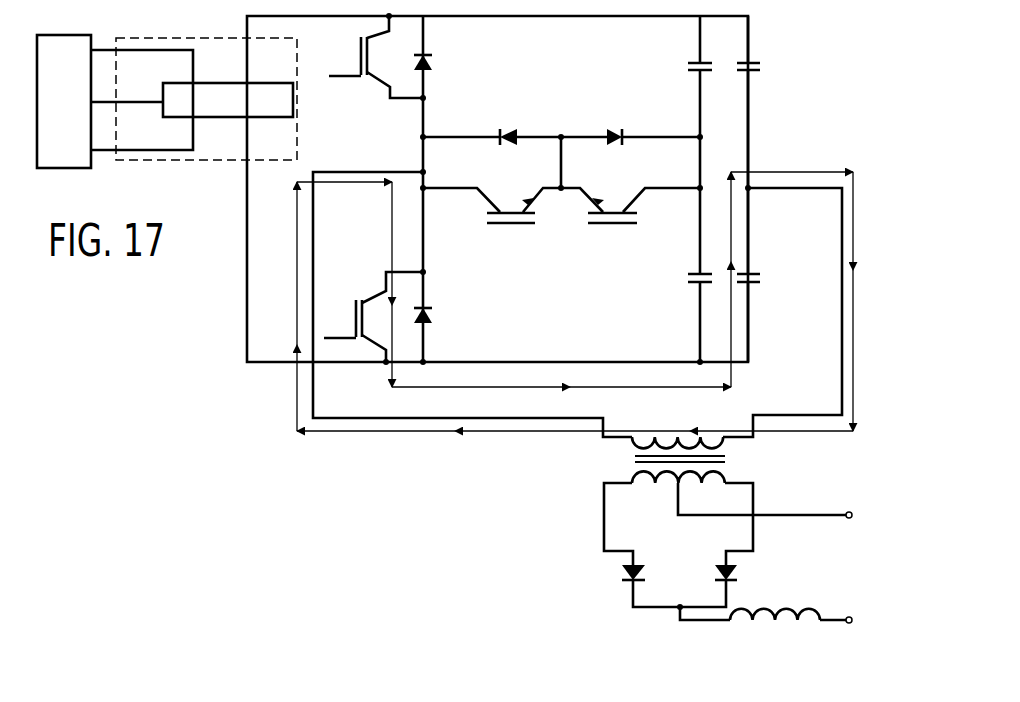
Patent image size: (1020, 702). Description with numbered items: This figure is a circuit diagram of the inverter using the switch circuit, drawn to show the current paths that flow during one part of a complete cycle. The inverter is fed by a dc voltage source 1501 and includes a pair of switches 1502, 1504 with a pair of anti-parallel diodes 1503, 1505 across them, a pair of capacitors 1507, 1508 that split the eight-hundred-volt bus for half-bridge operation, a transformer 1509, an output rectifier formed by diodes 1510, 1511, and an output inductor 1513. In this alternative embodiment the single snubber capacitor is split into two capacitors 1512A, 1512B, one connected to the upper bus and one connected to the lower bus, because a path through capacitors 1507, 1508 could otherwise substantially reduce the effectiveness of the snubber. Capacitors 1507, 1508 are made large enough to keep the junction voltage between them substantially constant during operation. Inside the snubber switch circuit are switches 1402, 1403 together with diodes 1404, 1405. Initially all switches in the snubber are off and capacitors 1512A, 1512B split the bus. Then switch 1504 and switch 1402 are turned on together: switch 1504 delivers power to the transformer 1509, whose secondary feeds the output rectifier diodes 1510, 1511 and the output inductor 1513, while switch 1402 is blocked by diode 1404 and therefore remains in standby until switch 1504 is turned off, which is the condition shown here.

The dc voltage source 1501 is at (205, 35).
The switch 1502 is at (340, 80).
The anti-parallel diode 1503 is at (432, 60).
The switch 1504 is at (356, 318).
The anti-parallel diode 1505 is at (430, 320).
The switch 1402 is at (513, 226).
The switch 1403 is at (612, 226).
The diode 1404 is at (505, 130).
The diode 1405 is at (612, 130).
The capacitor 1507 is at (757, 70).
The capacitor 1508 is at (757, 283).
The capacitor 1512A is at (688, 63).
The capacitor 1512B is at (688, 275).
The transformer 1509 is at (718, 455).
The diode 1510 is at (625, 570).
The diode 1511 is at (735, 568).
The output inductor 1513 is at (788, 610).